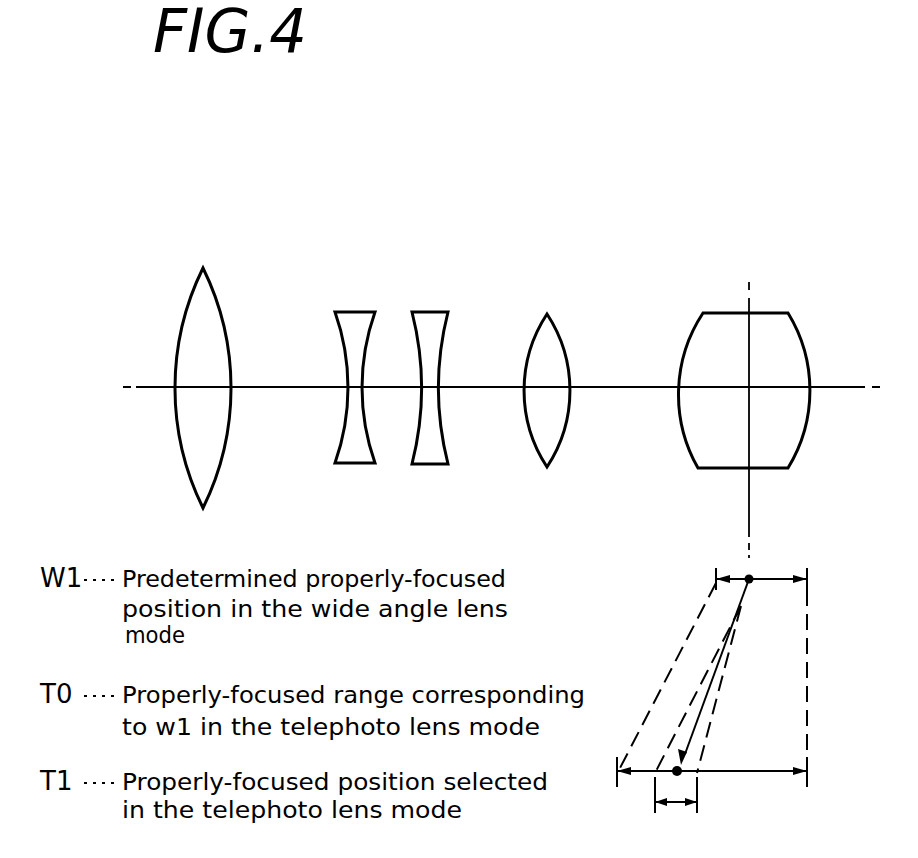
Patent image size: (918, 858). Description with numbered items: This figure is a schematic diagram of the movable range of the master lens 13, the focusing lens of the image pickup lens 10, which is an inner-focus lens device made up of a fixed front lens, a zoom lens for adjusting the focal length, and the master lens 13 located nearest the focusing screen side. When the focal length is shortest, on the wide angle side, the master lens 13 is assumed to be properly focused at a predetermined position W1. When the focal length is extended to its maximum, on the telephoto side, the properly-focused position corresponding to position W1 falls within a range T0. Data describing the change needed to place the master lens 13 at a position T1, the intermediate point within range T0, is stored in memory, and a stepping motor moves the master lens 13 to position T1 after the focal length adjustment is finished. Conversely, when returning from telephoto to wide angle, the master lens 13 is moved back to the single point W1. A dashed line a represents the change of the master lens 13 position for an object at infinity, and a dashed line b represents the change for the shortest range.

The image pickup lens 10 is at (812, 272).
The master lens 13 is at (798, 333).
The predetermined properly-focused position in wide angle mode W1 is at (752, 576).
The properly-focused range in telephoto mode T0 is at (676, 810).
The selected properly-focused position in telephoto mode T1 is at (679, 776).
The dashed line for infinity a is at (807, 686).
The dashed line for shortest range b is at (682, 643).